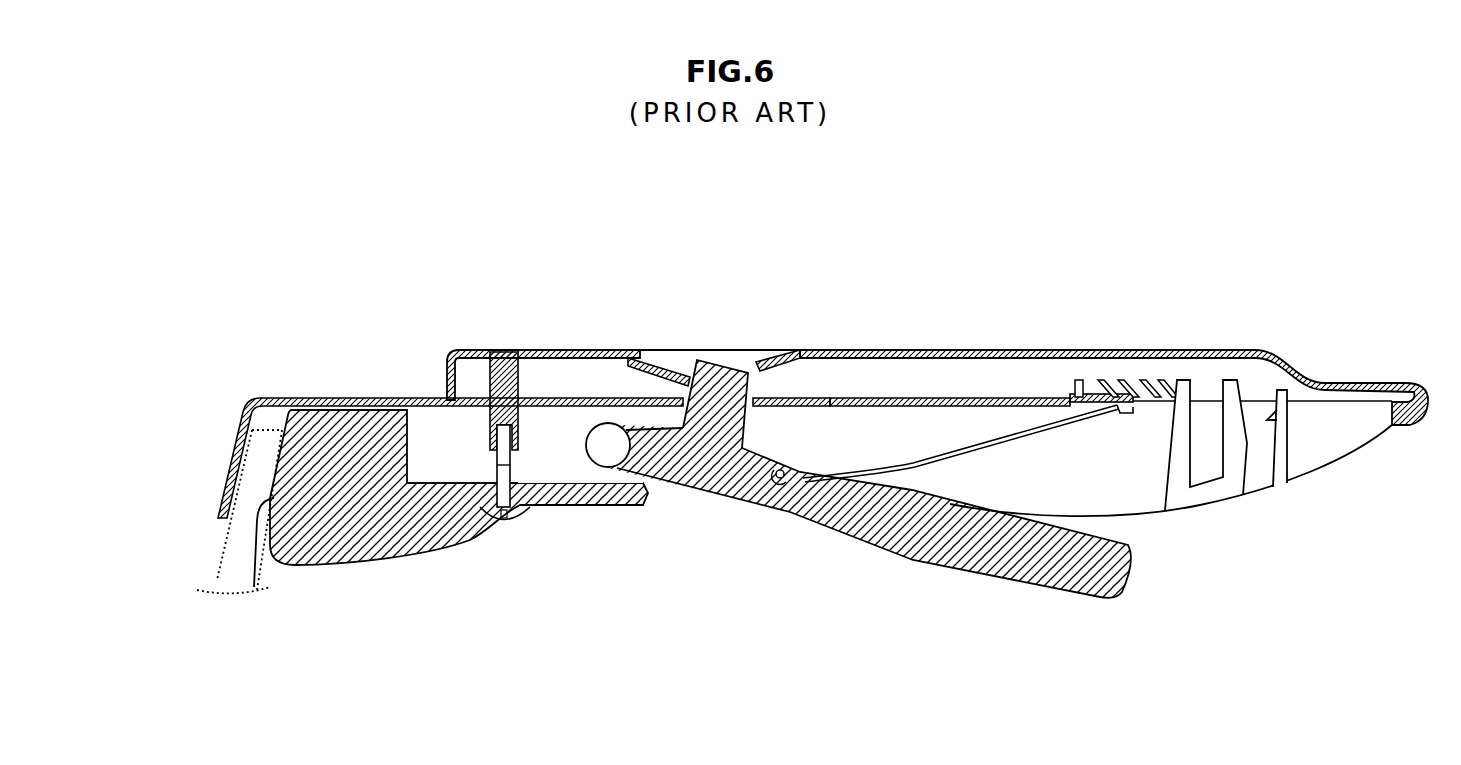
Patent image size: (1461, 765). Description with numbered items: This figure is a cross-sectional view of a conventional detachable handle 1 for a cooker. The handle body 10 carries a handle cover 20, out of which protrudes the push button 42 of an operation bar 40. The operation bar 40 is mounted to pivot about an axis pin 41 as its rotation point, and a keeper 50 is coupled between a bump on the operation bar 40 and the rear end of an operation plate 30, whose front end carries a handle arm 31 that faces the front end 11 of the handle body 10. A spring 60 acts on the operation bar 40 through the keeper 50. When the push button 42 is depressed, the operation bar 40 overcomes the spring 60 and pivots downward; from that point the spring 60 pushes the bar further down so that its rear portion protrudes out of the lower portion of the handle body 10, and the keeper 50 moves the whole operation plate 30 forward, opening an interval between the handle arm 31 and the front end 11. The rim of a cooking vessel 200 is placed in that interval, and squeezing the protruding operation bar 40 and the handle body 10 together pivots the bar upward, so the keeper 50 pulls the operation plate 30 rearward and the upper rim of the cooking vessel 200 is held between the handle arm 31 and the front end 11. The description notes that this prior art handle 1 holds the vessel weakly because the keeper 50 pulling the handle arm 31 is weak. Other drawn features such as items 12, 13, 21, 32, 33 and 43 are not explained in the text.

The handle 1 is at (1165, 298).
The handle body 10 is at (365, 517).
The front end of the handle body 11 is at (254, 587).
The recess 12 is at (537, 445).
The rib 13 is at (1185, 352).
The handle cover 20 is at (613, 352).
The hook portion of upper cover 21 is at (762, 360).
The operation plate 30 is at (943, 397).
The handle arm 31 is at (237, 447).
The plate portion 32 is at (820, 397).
The engaging portion of plate 33 is at (1070, 393).
The operation bar 40 is at (865, 415).
The axis pin 41 is at (605, 443).
The push button 42 is at (707, 360).
The pin 43 is at (783, 480).
The keeper 50 is at (912, 460).
The spring 60 is at (1120, 380).
The cooking vessel 200 is at (237, 542).